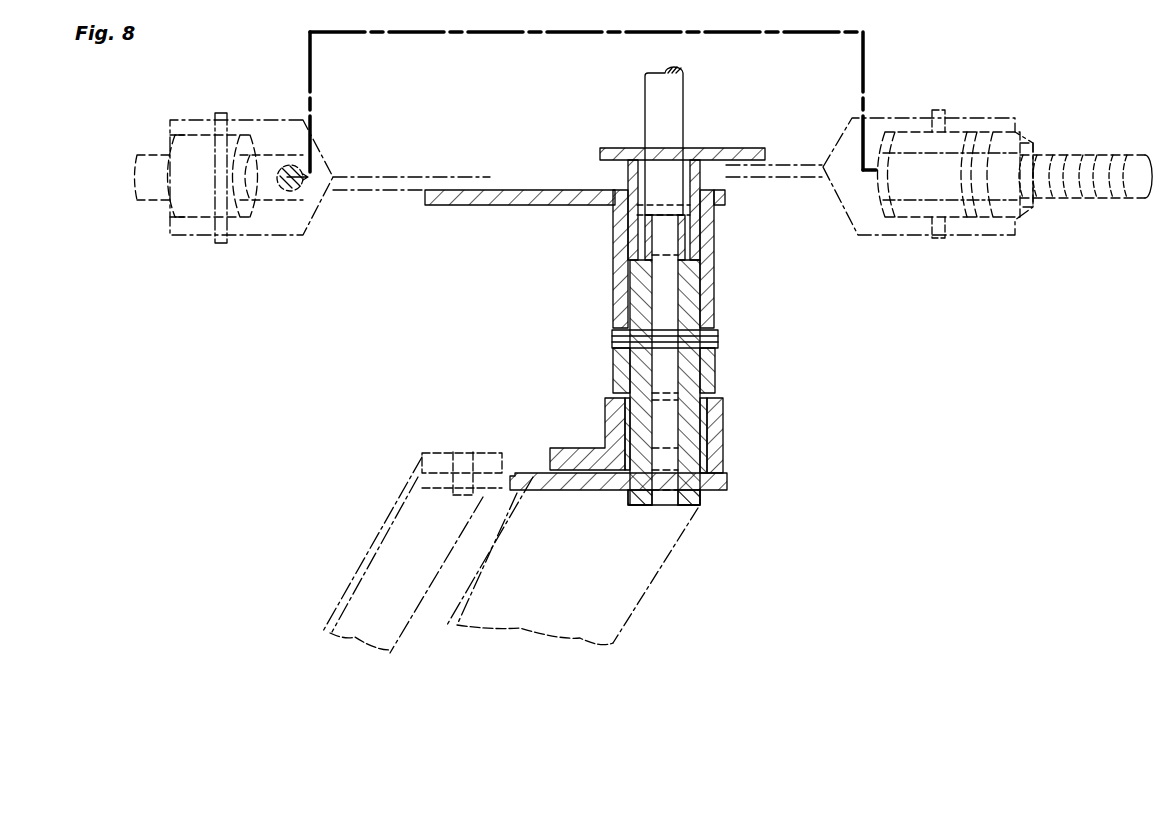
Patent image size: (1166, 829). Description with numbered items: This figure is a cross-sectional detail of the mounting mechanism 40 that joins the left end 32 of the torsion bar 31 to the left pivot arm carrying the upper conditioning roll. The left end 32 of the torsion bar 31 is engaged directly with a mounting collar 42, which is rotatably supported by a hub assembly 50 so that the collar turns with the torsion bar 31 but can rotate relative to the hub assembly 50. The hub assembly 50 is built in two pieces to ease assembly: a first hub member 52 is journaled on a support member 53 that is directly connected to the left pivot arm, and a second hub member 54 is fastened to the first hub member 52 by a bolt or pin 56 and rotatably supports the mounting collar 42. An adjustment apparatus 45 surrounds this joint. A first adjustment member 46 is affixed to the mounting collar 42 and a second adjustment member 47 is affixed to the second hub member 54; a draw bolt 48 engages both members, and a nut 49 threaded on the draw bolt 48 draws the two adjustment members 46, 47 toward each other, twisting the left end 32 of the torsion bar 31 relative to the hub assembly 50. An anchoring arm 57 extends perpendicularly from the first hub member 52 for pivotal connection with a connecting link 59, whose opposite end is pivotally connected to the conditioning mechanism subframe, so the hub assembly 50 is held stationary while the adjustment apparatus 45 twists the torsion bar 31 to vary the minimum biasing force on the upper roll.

The torsion bar 31 is at (685, 86).
The left end of torsion bar 32 is at (660, 173).
The mounting mechanism 40 is at (837, 337).
The mounting collar 42 is at (627, 173).
The adjustment apparatus 45 is at (937, 257).
The first adjustment member 46 is at (890, 113).
The second adjustment member 47 is at (290, 237).
The draw bolt 48 is at (1100, 148).
The nut 49 is at (1027, 142).
The hub assembly 50 is at (708, 507).
The first hub member 52 is at (637, 288).
The support member 53 is at (580, 447).
The second hub member 54 is at (613, 370).
The bolt or pin 56 is at (718, 336).
The anchoring arm 57 is at (552, 493).
The connecting link 59 is at (378, 541).